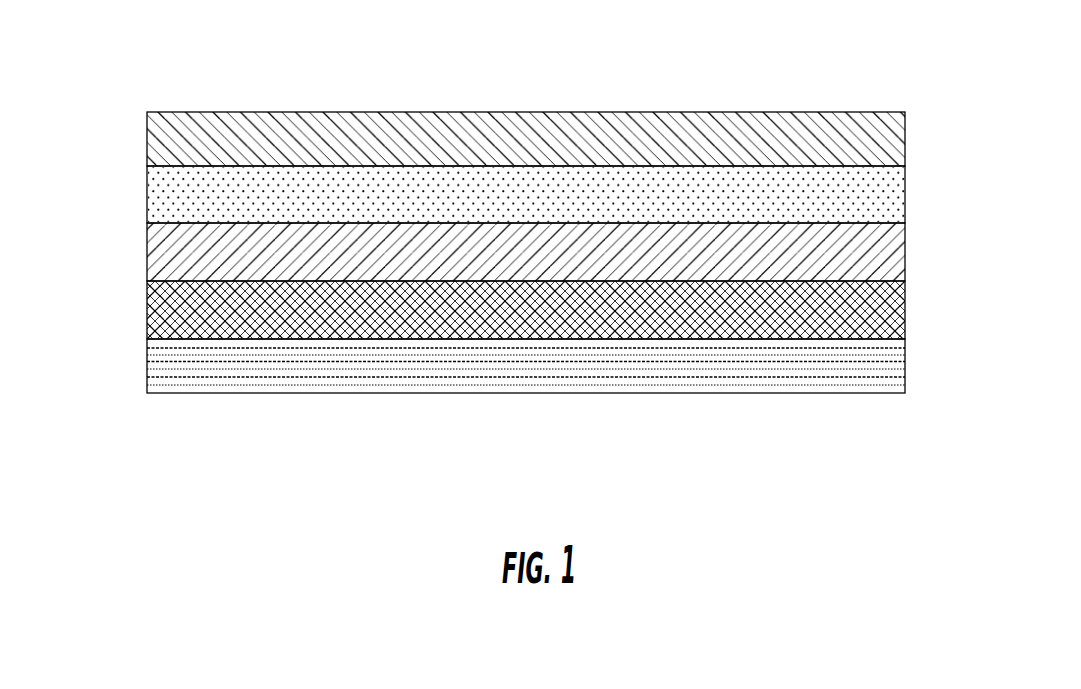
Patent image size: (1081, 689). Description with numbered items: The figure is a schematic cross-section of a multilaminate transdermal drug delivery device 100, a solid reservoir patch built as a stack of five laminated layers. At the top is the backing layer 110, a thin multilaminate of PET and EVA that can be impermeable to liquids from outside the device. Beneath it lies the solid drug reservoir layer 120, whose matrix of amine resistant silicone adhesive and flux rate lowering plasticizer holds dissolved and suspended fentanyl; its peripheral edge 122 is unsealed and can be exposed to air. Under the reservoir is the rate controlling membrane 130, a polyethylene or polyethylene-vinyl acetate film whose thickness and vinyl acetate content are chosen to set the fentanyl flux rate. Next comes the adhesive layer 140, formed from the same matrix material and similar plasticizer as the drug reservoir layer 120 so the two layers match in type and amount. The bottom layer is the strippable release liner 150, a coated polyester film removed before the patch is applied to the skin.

The multilaminate transdermal drug delivery device 100 is at (542, 36).
The backing layer 110 is at (918, 127).
The drug reservoir layer 120 is at (918, 182).
The peripheral edge 122 is at (177, 200).
The rate controlling membrane 130 is at (918, 258).
The adhesive layer 140 is at (135, 308).
The strippable release liner 150 is at (918, 373).